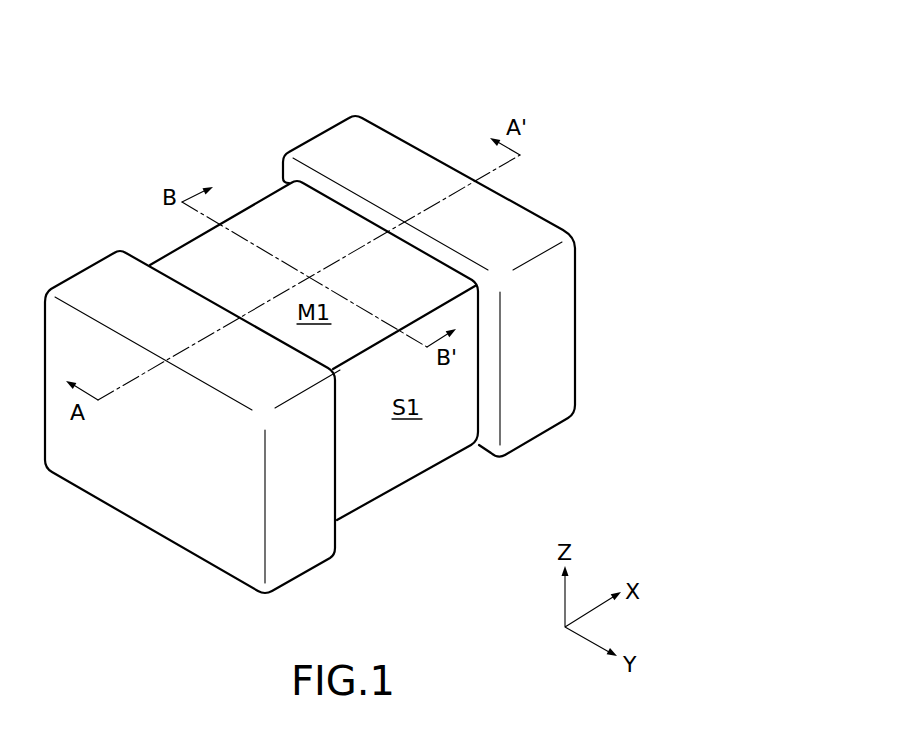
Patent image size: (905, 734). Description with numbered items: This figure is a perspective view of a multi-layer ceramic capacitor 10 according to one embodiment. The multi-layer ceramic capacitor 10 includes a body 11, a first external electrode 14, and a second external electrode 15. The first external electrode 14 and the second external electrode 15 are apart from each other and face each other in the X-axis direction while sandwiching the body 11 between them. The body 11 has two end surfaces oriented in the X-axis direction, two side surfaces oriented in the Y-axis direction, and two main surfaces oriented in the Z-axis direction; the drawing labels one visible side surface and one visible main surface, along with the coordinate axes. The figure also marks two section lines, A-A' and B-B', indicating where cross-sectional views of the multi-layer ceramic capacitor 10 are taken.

The multi-layer ceramic capacitor 10 is at (310, 301).
The body 11 is at (250, 186).
The first external electrode 14 is at (95, 287).
The second external electrode 15 is at (332, 150).